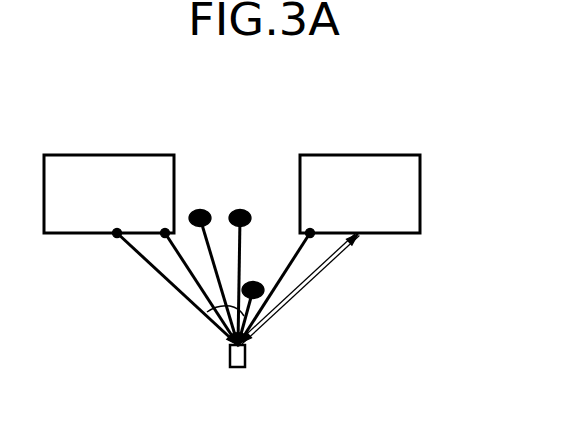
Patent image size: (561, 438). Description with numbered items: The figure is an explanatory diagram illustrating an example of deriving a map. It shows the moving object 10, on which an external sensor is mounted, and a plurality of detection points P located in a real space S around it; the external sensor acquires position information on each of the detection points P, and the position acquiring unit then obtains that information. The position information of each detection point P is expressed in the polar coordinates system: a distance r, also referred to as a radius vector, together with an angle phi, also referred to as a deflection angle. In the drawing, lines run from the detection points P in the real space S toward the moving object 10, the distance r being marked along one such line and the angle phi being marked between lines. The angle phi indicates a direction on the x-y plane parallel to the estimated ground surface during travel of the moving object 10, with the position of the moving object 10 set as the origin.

The moving object 10 is at (230, 348).
The detection point P is at (117, 236).
The real space S is at (333, 117).
The distance r is at (299, 289).
The angle phi is at (207, 312).